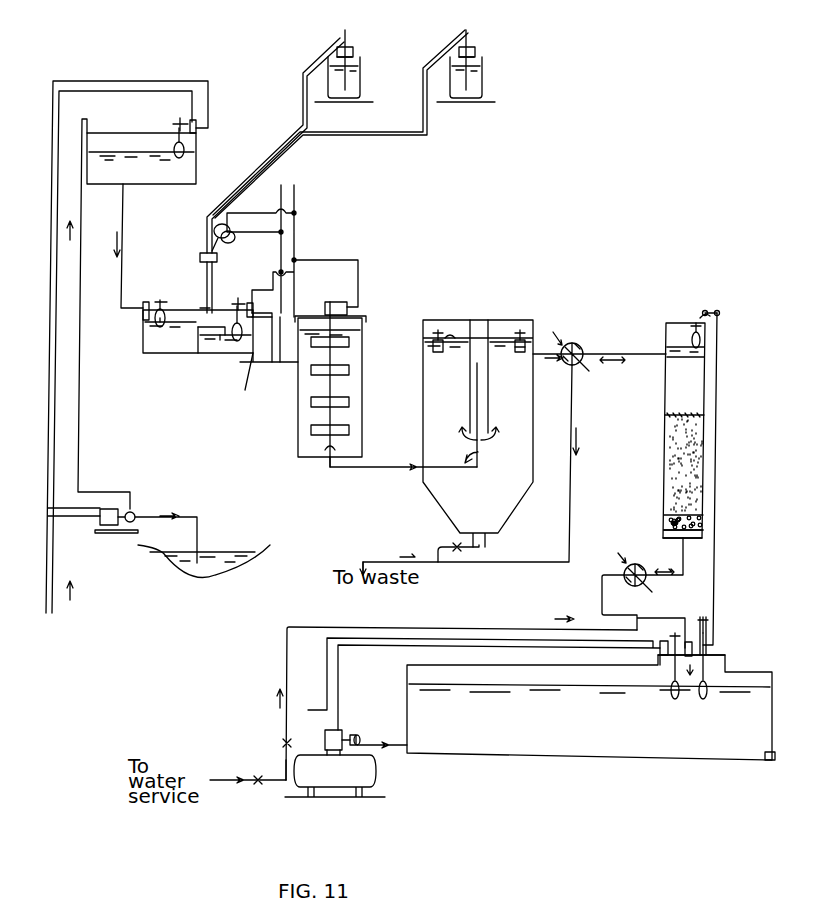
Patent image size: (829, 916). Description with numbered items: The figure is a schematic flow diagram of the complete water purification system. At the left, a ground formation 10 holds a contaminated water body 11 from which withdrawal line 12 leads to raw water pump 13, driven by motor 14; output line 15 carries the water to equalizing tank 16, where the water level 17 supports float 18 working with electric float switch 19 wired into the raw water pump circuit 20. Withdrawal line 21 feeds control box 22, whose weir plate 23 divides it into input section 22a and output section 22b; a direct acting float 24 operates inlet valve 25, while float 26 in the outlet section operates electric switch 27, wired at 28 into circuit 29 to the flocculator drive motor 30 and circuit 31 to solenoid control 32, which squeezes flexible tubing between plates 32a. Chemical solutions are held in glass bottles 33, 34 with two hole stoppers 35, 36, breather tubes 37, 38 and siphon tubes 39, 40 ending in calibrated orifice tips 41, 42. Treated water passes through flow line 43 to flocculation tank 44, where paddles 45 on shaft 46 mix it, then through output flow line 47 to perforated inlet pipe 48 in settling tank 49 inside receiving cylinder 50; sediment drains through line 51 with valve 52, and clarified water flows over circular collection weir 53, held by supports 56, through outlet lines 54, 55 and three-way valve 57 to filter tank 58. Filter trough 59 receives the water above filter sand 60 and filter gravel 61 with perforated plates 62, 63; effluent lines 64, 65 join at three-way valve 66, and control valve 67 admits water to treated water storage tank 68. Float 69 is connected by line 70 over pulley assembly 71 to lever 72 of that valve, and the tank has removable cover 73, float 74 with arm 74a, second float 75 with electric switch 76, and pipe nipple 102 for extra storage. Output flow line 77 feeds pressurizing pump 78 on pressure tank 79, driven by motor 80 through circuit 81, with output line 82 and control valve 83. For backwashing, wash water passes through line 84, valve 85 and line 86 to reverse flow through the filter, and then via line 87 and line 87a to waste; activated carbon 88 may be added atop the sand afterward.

The ground or earth formation 10 is at (258, 545).
The contaminated water body 11 is at (207, 550).
The withdrawal line 12 is at (147, 516).
The raw water pump 13 is at (132, 511).
The motor 14 is at (100, 525).
The output line 15 is at (75, 385).
The equalizing tank 16 is at (108, 184).
The body of water 17 is at (99, 152).
The float 18 is at (179, 160).
The electric float switch 19 is at (188, 122).
The raw water pump circuit 20 is at (80, 93).
The withdrawal line 21 is at (124, 230).
The control box 22 is at (160, 355).
The input section 22a is at (150, 338).
The output section 22b is at (222, 355).
The weir plate 23 is at (202, 345).
The direct acting float 24 is at (165, 300).
The inlet valve 25 is at (146, 302).
The float 26 is at (236, 345).
The electric switch 27 is at (250, 305).
The wiring 28 is at (273, 290).
The circuit 29 is at (320, 270).
The flocculator drive motor 30 is at (336, 302).
The circuit 31 is at (244, 232).
The solenoid control 32 is at (232, 240).
The plates 32a is at (200, 256).
The glass bottle 33 is at (358, 82).
The glass bottle 34 is at (480, 82).
The two hole stopper 35 is at (353, 49).
The two hole stopper 36 is at (475, 50).
The breather tube 37 is at (349, 33).
The breather tube 38 is at (470, 33).
The siphon tube 39 is at (323, 55).
The siphon tube 40 is at (440, 55).
The tip 41 is at (233, 304).
The tip 42 is at (206, 296).
The flow line 43 is at (258, 362).
The flocculation tank 44 is at (298, 455).
The paddles 45 is at (312, 408).
The shaft 46 is at (312, 375).
The output flow line 47 is at (356, 467).
The perforated inlet pipe 48 is at (480, 448).
The settling tank 49 is at (423, 382).
The receiving cylinder 50 is at (489, 395).
The line 51 is at (438, 552).
The valve 52 is at (456, 543).
The circular collection weir 53 is at (446, 352).
The outlet line 54 is at (548, 337).
The outlet line 55 is at (645, 355).
The supports 56 is at (432, 343).
The three-way valve 57 is at (583, 348).
The filter tank 58 is at (666, 380).
The filter trough 59 is at (666, 343).
The filter sand 60 is at (684, 455).
The filter gravel 61 is at (672, 520).
The perforated plate 62 is at (674, 512).
The perforated plate 63 is at (670, 527).
The filter effluent line 64 is at (684, 555).
The filter effluent line 65 is at (602, 594).
The three-way valve 66 is at (632, 587).
The control valve 67 is at (689, 640).
The treated water storage tank 68 is at (518, 760).
The float 69 is at (694, 332).
The line 70 is at (710, 348).
The pulley assembly 71 is at (708, 310).
The lever 72 is at (712, 645).
The removable cover 73 is at (725, 660).
The float 74 is at (707, 698).
The arm 74a is at (708, 618).
The second float 75 is at (672, 698).
The electric switch 76 is at (660, 652).
The output flow line 77 is at (400, 745).
The pressurizing pump 78 is at (356, 735).
The pressure tank 79 is at (360, 775).
The motor 80 is at (325, 733).
The circuit 81 is at (330, 640).
The output line 82 is at (280, 783).
The control valve 83 is at (255, 785).
The line 84 is at (287, 768).
The valve 85 is at (285, 743).
The line 86 is at (348, 627).
The line 87 is at (570, 550).
The line 87a is at (370, 547).
The activated carbon 88 is at (698, 414).
The pipe nipple 102 is at (778, 762).